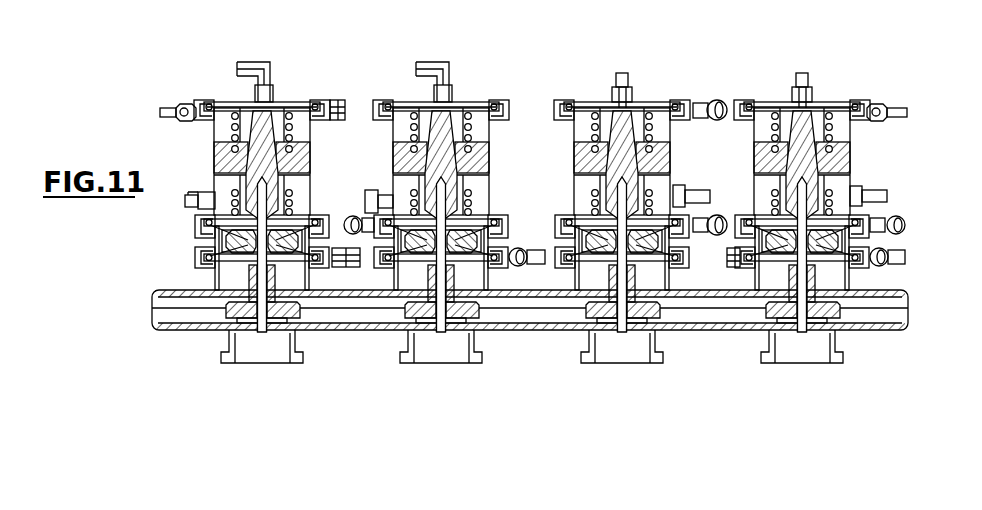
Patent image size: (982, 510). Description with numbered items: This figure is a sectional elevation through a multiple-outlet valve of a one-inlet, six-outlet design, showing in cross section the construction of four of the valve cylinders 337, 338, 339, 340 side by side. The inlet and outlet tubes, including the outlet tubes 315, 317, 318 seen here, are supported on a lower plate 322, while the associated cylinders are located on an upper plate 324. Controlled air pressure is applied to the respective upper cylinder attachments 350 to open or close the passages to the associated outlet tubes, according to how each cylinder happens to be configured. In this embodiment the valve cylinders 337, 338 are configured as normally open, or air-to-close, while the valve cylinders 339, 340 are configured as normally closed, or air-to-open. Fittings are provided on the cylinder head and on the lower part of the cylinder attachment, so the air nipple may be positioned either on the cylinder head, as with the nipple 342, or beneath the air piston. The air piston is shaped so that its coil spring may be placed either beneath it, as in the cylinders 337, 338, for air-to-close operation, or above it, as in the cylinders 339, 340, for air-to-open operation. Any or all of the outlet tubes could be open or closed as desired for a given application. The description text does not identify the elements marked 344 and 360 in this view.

The outlet tube 315 is at (223, 350).
The outlet tube 317 is at (658, 348).
The outlet tube 318 is at (838, 350).
The lower plate 322 is at (557, 326).
The upper plate 324 is at (897, 294).
The valve cylinder 337 is at (188, 76).
The valve cylinder 338 is at (460, 71).
The valve cylinder 339 is at (648, 71).
The valve cylinder 340 is at (838, 72).
The air nipple 342 is at (258, 60).
The valve seat 344 is at (232, 252).
The upper cylinder attachment 350 is at (214, 146).
The mounting nut 360 is at (299, 320).